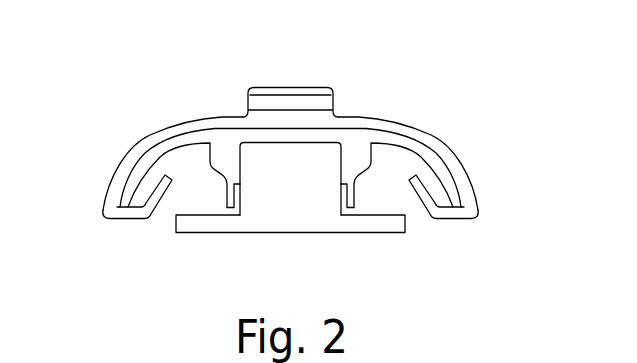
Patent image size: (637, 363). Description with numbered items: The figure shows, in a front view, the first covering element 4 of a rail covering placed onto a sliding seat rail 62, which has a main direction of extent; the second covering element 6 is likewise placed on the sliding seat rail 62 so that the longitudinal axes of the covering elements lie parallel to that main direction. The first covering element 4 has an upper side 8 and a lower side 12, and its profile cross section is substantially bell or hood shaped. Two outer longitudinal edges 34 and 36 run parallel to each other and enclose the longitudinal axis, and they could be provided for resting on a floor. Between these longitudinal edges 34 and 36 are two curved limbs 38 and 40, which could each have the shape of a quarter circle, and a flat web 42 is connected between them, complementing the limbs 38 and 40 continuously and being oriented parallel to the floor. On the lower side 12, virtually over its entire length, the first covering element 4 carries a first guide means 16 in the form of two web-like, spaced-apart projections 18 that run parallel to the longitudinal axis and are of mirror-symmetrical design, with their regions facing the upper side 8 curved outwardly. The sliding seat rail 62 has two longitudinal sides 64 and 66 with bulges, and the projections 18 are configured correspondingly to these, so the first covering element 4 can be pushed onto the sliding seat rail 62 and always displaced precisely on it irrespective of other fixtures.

The first elongate covering element 4 is at (331, 136).
The second elongate covering element 6 is at (177, 126).
The upper side 8 is at (247, 97).
The lower side 12 is at (405, 204).
The first guide means 16 is at (338, 193).
The projections 18 is at (221, 176).
The outer longitudinal edge 34 is at (115, 211).
The outer longitudinal edge 36 is at (457, 200).
The curved limb 38 is at (138, 168).
The curved limb 40 is at (437, 155).
The flat web 42 is at (305, 127).
The sliding seat rail 62 is at (263, 163).
The longitudinal side 64 is at (225, 146).
The longitudinal side 66 is at (352, 144).